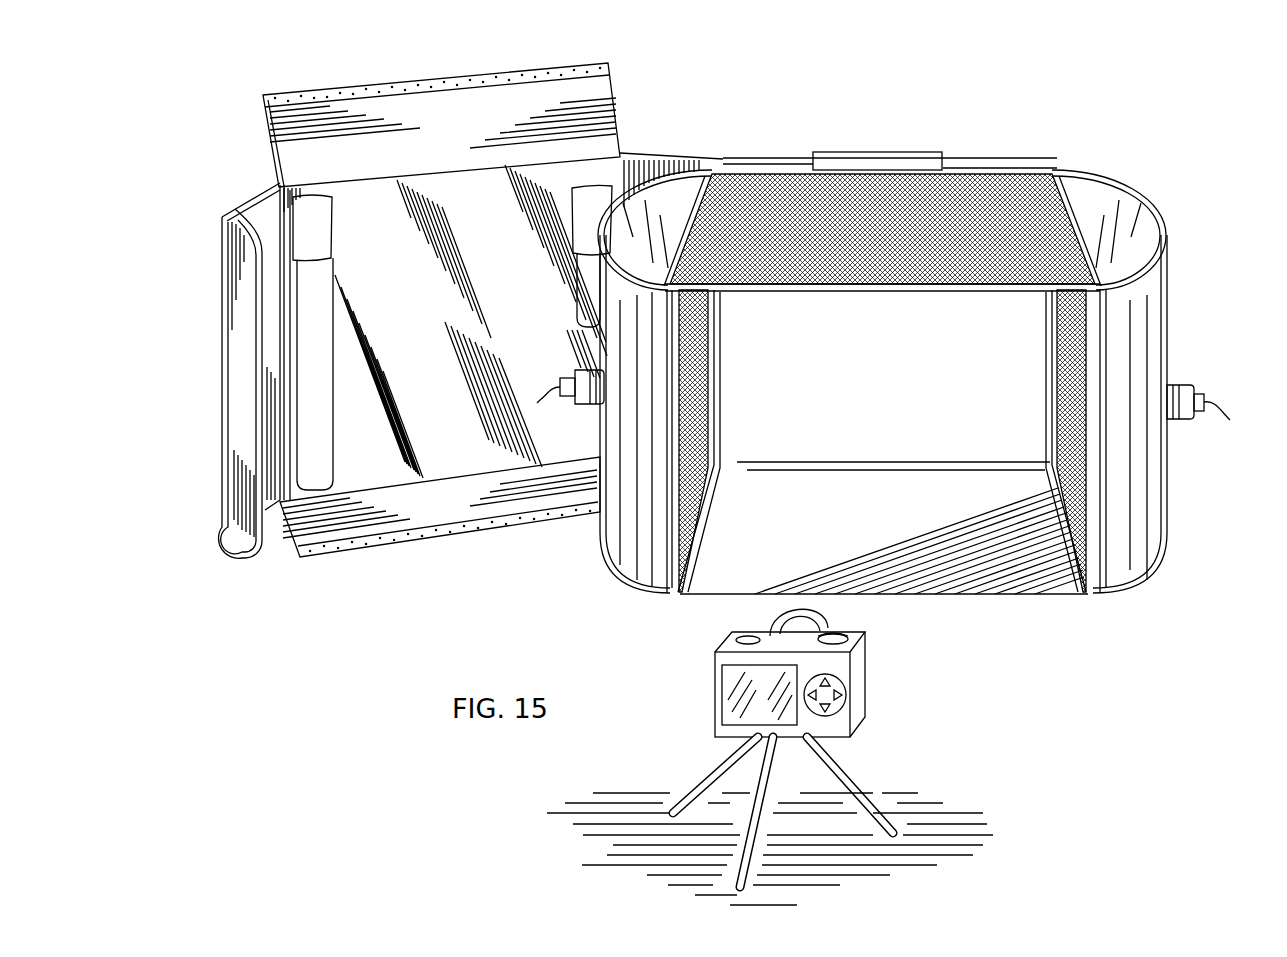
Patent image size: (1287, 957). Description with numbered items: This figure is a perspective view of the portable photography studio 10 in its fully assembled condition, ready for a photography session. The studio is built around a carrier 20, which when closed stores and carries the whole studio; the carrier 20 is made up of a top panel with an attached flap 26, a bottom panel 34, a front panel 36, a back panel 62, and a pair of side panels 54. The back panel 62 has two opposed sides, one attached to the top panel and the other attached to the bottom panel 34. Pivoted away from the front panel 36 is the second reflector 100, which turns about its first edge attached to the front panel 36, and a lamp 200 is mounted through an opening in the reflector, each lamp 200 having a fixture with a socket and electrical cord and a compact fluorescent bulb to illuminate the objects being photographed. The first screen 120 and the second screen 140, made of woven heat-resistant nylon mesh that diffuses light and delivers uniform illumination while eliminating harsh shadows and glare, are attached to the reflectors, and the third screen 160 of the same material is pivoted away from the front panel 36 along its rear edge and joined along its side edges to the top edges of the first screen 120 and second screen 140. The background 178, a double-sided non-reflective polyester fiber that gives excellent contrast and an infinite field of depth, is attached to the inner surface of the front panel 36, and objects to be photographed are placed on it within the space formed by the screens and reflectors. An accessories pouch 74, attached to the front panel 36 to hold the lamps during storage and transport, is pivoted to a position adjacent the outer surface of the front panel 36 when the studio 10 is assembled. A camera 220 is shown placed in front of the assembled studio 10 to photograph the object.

The portable photography studio 10 is at (1114, 115).
The carrier 20 is at (364, 70).
The flap 26 is at (238, 368).
The bottom panel 34 is at (668, 167).
The front panel 36 is at (763, 160).
The side panel 54 is at (601, 104).
The back panel 62 is at (483, 280).
The accessories pouch 74 is at (871, 160).
The second reflector 100 is at (625, 550).
The first screen 120 is at (1070, 383).
The second screen 140 is at (700, 363).
The third screen 160 is at (957, 195).
The background 178 is at (892, 520).
The lamp 200 is at (580, 377).
The camera 220 is at (860, 688).